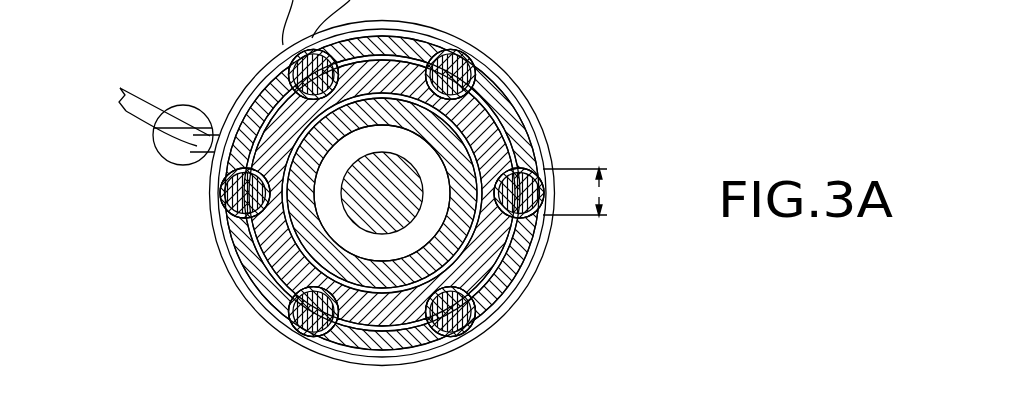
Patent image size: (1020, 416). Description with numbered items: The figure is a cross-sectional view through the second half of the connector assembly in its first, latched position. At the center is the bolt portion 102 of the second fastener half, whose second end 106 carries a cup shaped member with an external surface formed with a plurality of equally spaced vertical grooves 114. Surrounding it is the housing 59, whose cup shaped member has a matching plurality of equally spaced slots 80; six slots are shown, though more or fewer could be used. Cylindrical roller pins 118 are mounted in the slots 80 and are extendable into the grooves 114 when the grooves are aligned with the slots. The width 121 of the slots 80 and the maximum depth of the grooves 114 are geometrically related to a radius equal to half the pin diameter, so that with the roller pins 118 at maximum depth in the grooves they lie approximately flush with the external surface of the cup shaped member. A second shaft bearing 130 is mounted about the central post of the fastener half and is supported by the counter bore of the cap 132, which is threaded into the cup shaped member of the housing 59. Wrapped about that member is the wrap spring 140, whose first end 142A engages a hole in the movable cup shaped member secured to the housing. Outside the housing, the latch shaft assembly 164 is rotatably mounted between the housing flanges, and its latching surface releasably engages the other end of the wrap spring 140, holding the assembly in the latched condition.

The housing 59 is at (520, 292).
The slots 80 is at (477, 67).
The bolt portion 102 is at (313, 118).
The second end 106 is at (393, 326).
The vertical grooves 114 is at (625, 395).
The cylindrical roller pins 118 is at (462, 58).
The width of the slots 121 is at (603, 193).
The second shaft bearing 130 is at (317, 260).
The cap 132 is at (307, 293).
The wrap spring 140 is at (530, 106).
The first end of the wrap spring 142A is at (175, 152).
The latch shaft assembly 164 is at (136, 90).